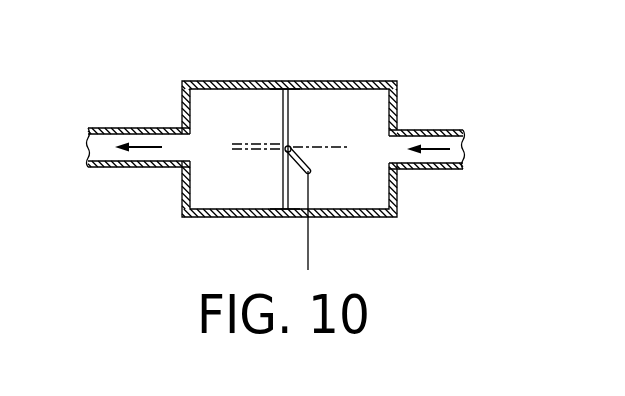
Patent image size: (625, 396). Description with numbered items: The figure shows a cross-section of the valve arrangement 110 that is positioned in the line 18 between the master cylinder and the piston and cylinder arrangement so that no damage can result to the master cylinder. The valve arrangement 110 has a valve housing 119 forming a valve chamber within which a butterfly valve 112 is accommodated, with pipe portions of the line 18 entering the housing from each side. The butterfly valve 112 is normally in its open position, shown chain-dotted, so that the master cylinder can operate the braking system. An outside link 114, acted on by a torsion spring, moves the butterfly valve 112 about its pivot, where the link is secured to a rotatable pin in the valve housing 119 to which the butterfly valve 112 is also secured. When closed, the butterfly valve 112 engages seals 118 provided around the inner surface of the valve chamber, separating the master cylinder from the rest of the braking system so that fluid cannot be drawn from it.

The valve arrangement 110 is at (378, 66).
The butterfly valve 112 is at (260, 143).
The outside link 114 is at (312, 172).
The seals 118 is at (293, 93).
The valve housing 119 is at (397, 110).
The line 18 is at (142, 128).